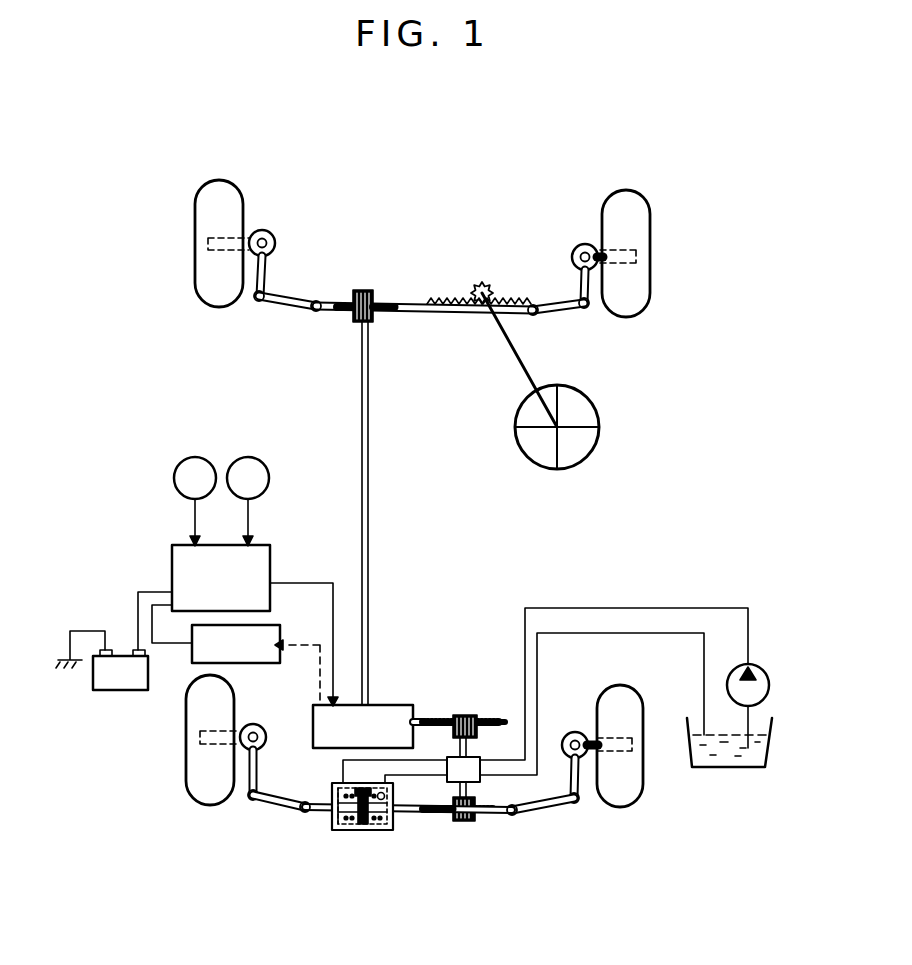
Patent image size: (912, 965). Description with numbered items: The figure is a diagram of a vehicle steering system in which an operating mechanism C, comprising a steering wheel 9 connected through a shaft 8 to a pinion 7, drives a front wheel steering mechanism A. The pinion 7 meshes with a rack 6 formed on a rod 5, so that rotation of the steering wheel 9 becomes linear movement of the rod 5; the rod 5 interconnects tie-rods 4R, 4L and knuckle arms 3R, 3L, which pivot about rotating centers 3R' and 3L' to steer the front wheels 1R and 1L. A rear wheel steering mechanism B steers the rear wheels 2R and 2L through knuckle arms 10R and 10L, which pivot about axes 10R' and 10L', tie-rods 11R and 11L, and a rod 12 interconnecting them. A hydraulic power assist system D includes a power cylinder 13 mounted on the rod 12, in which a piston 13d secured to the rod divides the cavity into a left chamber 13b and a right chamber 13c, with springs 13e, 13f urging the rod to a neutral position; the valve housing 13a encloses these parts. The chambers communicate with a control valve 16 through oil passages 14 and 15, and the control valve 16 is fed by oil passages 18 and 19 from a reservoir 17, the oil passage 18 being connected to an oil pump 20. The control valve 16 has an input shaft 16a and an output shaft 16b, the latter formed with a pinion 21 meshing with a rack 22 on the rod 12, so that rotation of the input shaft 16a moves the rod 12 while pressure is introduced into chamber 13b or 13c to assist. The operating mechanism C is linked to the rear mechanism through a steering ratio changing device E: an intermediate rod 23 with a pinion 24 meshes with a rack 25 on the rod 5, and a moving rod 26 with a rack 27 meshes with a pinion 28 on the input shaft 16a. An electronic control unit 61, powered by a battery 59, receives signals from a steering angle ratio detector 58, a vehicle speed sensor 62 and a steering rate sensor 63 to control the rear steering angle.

The front wheel 1L is at (215, 207).
The front wheel 1R is at (650, 224).
The rotating center 3L' is at (276, 215).
The rotating center 3R' is at (562, 235).
The knuckle arm 3L is at (290, 276).
The knuckle arm 3R is at (551, 274).
The tie-rod 4L is at (292, 310).
The tie-rod 4R is at (563, 315).
The rod 5 is at (426, 315).
The rack 6 is at (437, 298).
The pinion 7 is at (481, 286).
The shaft 8 is at (508, 350).
The steering wheel 9 is at (594, 418).
The pinion 24 is at (365, 290).
The rack 25 is at (388, 315).
The intermediate rod 23 is at (370, 590).
The vehicle speed sensor 62 is at (193, 464).
The steering rate sensor 63 is at (250, 464).
The electronic control unit 61 is at (272, 563).
The steering angle ratio detector 58 is at (192, 652).
The battery 59 is at (113, 688).
The rear wheel 2L is at (185, 763).
The rear wheel 2R is at (642, 792).
The axis 10L' is at (260, 718).
The axis 10R' is at (569, 714).
The knuckle arm 10L is at (245, 819).
The knuckle arm 10R is at (580, 820).
The tie-rod 11L is at (290, 815).
The tie-rod 11R is at (565, 810).
The rod 12 is at (420, 815).
The power cylinder 13 is at (357, 842).
The valve housing 13a is at (345, 826).
The left chamber 13b is at (350, 828).
The right chamber 13c is at (397, 822).
The piston 13d is at (366, 828).
The spring 13e is at (332, 793).
The spring 13f is at (392, 792).
The oil passage 14 is at (420, 757).
The oil passage 15 is at (435, 773).
The control valve 16 is at (494, 786).
The input shaft 16a is at (480, 748).
The output shaft 16b is at (495, 812).
The reservoir 17 is at (770, 752).
The oil passage 18 is at (598, 608).
The oil passage 19 is at (615, 634).
The oil pump 20 is at (766, 676).
The pinion 21 is at (467, 790).
The rack 22 is at (452, 820).
The moving rod 26 is at (423, 722).
The rack 27 is at (479, 716).
The pinion 28 is at (463, 713).
The front wheel steering mechanism A is at (305, 236).
The rear wheel steering mechanism B is at (268, 818).
The operating mechanism C is at (517, 388).
The hydraulic power assist system D is at (404, 826).
The steering ratio changing device E is at (313, 730).